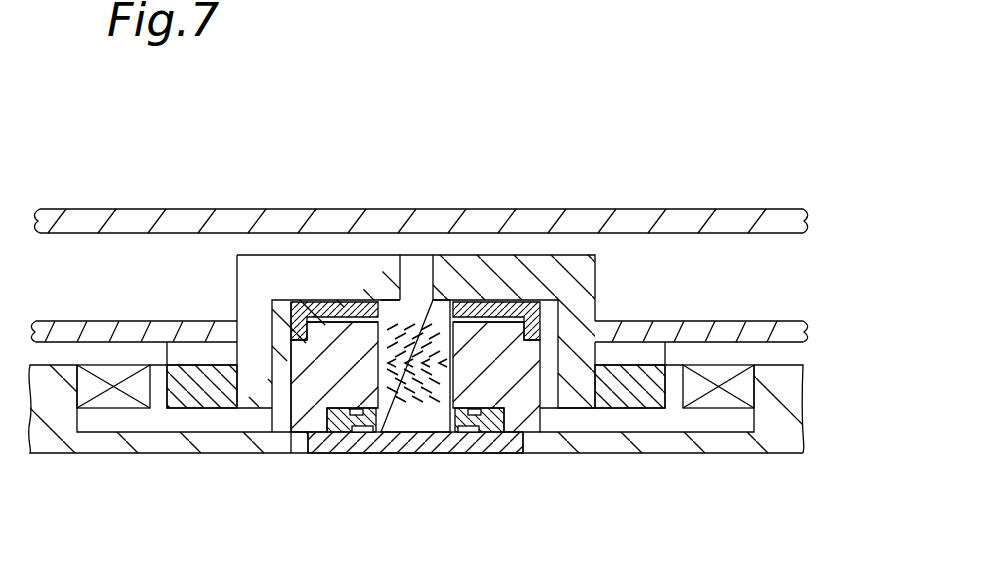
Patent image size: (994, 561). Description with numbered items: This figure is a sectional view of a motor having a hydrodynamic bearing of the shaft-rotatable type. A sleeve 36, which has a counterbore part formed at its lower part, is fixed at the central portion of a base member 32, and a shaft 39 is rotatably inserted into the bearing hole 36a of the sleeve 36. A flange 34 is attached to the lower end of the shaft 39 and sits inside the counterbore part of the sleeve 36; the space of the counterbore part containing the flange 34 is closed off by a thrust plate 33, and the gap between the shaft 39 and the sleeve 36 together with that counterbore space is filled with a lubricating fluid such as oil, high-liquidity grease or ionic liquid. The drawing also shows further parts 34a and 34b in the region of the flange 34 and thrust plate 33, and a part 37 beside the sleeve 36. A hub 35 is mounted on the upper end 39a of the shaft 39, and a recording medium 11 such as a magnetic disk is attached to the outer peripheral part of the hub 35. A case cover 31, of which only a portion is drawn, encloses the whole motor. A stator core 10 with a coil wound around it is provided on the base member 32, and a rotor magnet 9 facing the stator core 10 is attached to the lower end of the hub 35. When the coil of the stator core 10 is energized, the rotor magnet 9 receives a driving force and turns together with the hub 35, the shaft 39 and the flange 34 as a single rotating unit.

The rotor magnet 9 is at (210, 392).
The stator core 10 is at (112, 400).
The recording medium 11 is at (127, 334).
The case cover 31 is at (279, 224).
The base member 32 is at (173, 445).
The thrust plate 33 is at (380, 445).
The flange 34 is at (347, 420).
The support member part 34a is at (470, 432).
The support member part 34b is at (485, 423).
The hub 35 is at (583, 292).
The sleeve 36 is at (308, 364).
The bearing hole 36a is at (393, 333).
The yoke 37 is at (530, 313).
The shaft 39 is at (422, 415).
The upper end 39a is at (413, 268).